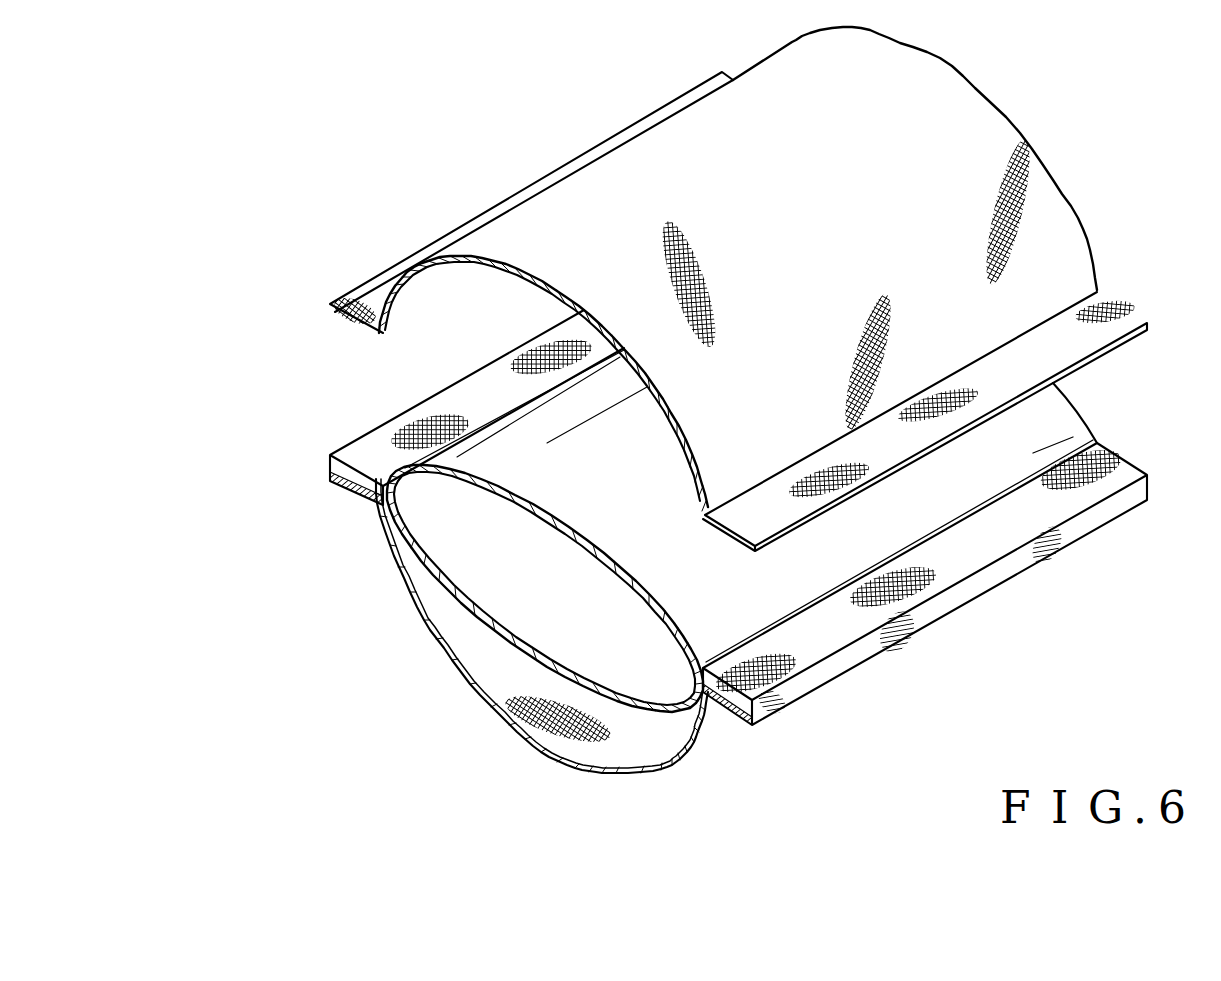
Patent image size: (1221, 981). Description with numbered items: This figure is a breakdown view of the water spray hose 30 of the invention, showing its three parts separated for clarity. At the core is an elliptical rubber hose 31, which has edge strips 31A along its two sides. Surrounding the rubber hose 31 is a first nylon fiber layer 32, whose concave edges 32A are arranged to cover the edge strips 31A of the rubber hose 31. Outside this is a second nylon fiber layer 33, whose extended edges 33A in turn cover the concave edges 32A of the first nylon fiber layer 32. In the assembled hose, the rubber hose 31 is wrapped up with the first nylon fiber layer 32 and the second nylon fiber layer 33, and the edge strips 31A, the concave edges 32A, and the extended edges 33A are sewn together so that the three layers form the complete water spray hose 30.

The water spray hose 30 is at (247, 306).
The elliptical rubber hose 31 is at (516, 650).
The edge strips 31A is at (348, 488).
The first nylon fiber layer 32 is at (573, 762).
The concave edges 32A is at (372, 442).
The second nylon fiber layer 33 is at (1043, 184).
The extended edges 33A is at (397, 275).